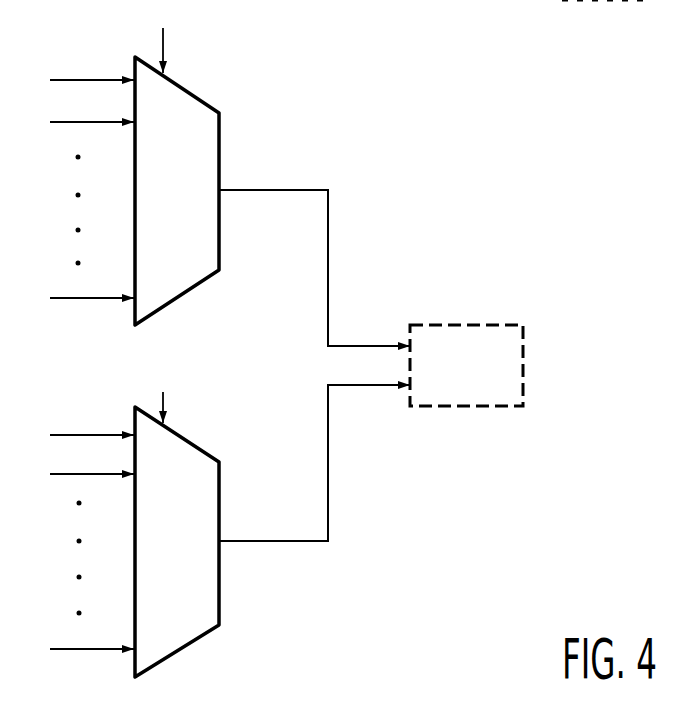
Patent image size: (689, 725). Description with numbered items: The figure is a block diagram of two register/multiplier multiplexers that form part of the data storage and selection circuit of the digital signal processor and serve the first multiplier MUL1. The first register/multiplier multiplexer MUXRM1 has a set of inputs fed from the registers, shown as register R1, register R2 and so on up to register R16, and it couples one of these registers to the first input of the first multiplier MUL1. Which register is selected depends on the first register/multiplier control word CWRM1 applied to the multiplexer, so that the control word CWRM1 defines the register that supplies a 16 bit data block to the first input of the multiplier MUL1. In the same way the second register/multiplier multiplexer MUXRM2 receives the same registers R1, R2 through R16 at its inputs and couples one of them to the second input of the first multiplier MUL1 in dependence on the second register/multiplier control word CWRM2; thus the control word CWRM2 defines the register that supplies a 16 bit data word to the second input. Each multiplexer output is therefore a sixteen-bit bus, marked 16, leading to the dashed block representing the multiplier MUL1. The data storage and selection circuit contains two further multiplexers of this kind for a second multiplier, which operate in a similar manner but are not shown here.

The first register/multiplier multiplexer MUXRM1 is at (194, 112).
The second register/multiplier multiplexer MUXRM2 is at (194, 464).
The first register/multiplier control word CWRM1 is at (166, 36).
The second register/multiplier control word CWRM2 is at (169, 391).
The register R1 is at (74, 255).
The register R2 is at (74, 296).
The register R16 is at (71, 473).
The 16 bit data block 16 is at (272, 198).
The first multiplier MUL1 is at (476, 340).